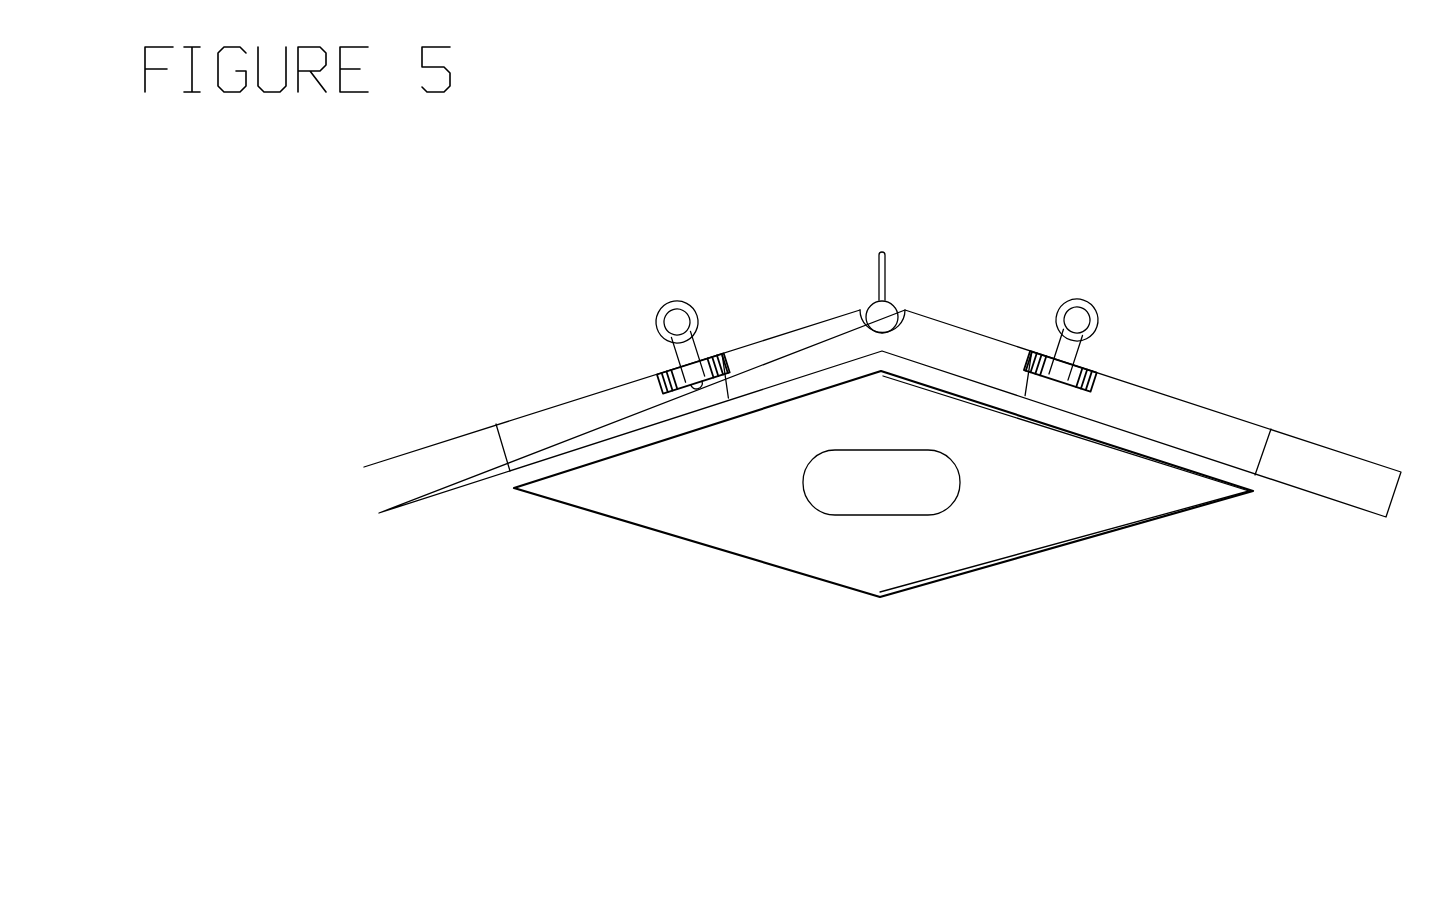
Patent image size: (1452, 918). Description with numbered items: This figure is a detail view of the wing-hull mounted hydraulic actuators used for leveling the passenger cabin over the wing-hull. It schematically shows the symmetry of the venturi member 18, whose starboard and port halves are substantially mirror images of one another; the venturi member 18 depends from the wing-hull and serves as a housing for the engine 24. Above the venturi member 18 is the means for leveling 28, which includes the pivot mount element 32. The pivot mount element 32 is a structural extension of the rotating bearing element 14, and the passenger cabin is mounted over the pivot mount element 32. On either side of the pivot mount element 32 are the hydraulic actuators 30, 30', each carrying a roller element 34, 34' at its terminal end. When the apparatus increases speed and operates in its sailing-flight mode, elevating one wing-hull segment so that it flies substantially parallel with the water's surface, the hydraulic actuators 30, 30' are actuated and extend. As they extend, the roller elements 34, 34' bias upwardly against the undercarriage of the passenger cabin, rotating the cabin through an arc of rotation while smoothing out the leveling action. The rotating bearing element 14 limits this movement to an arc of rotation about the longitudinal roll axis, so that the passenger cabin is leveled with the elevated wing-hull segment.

The rotating bearing element 14 is at (860, 308).
The venturi member 18 is at (743, 558).
The engine 24 is at (935, 517).
The means for leveling 28 is at (1353, 358).
The hydraulic actuator 30 is at (591, 364).
The hydraulic actuator 30' is at (1138, 361).
The pivot mount element 32 is at (886, 254).
The roller element 34 is at (617, 298).
The roller element 34' is at (1137, 303).